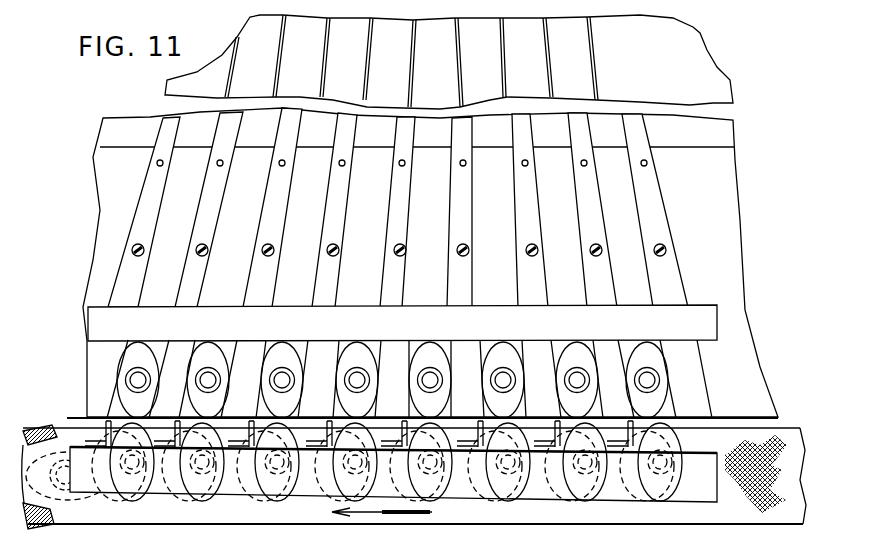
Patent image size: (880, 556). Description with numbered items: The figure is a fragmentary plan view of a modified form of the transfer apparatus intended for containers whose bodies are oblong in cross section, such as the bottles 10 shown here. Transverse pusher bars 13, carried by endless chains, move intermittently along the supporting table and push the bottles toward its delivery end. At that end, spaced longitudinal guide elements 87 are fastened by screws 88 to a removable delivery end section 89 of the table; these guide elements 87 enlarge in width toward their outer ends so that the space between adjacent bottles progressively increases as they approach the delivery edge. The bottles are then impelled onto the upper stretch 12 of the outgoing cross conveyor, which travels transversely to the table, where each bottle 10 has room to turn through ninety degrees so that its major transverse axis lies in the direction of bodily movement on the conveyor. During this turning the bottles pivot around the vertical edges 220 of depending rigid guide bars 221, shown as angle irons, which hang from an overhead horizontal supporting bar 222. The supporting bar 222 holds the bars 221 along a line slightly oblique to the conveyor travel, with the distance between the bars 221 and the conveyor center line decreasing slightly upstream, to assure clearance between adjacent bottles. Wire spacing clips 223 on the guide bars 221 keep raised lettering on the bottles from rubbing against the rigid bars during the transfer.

The bottle 10 is at (345, 354).
The upper stretch of outgoing cross conveyor 12 is at (98, 512).
The transverse pusher bar 13 is at (698, 324).
The longitudinal guide element 87 is at (152, 176).
The screw 88 is at (461, 248).
The removable delivery end section 89 is at (727, 197).
The vertical edge 220 is at (322, 454).
The depending rigid guide bar 221 is at (110, 442).
The overhead horizontal supporting bar 222 is at (232, 490).
The wire spacing clip 223 is at (252, 421).